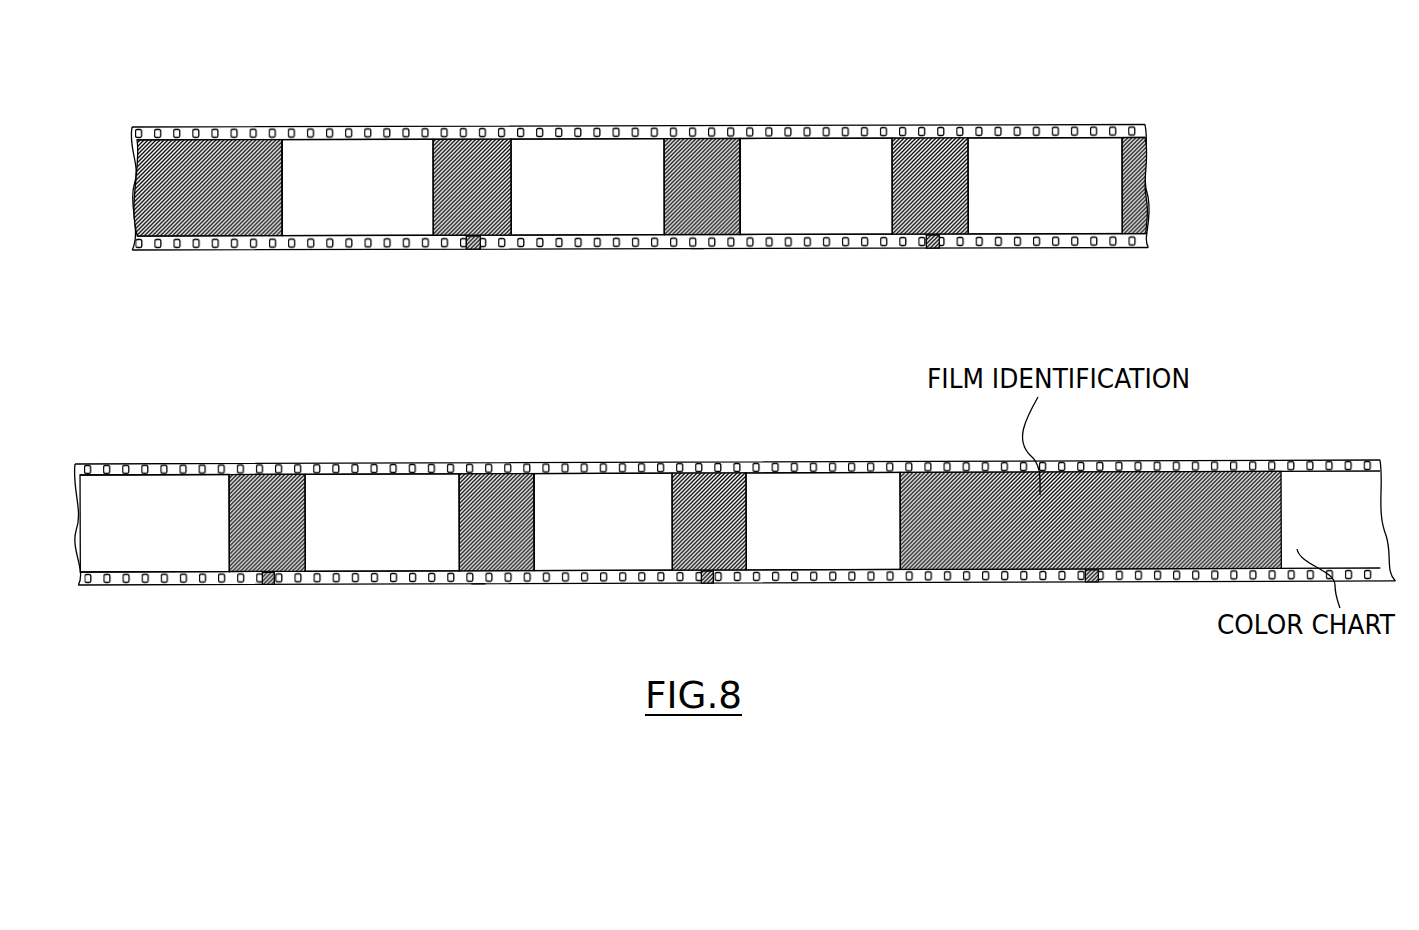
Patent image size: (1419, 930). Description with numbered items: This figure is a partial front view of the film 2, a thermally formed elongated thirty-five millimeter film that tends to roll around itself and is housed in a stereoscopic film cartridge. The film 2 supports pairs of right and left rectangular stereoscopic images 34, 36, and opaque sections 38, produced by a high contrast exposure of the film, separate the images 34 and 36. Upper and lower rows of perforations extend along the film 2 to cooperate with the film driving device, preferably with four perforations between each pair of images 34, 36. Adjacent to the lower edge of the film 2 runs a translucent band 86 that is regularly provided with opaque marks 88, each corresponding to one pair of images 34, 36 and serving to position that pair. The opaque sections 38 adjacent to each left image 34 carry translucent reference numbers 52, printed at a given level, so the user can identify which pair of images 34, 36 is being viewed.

The film 2 is at (188, 272).
The left stereoscopic image 34 is at (355, 168).
The right stereoscopic image 36 is at (585, 166).
The opaque section 38 is at (473, 168).
The translucent reference number 52 is at (290, 174).
The translucent band 86 is at (697, 248).
The opaque mark 88 is at (473, 250).